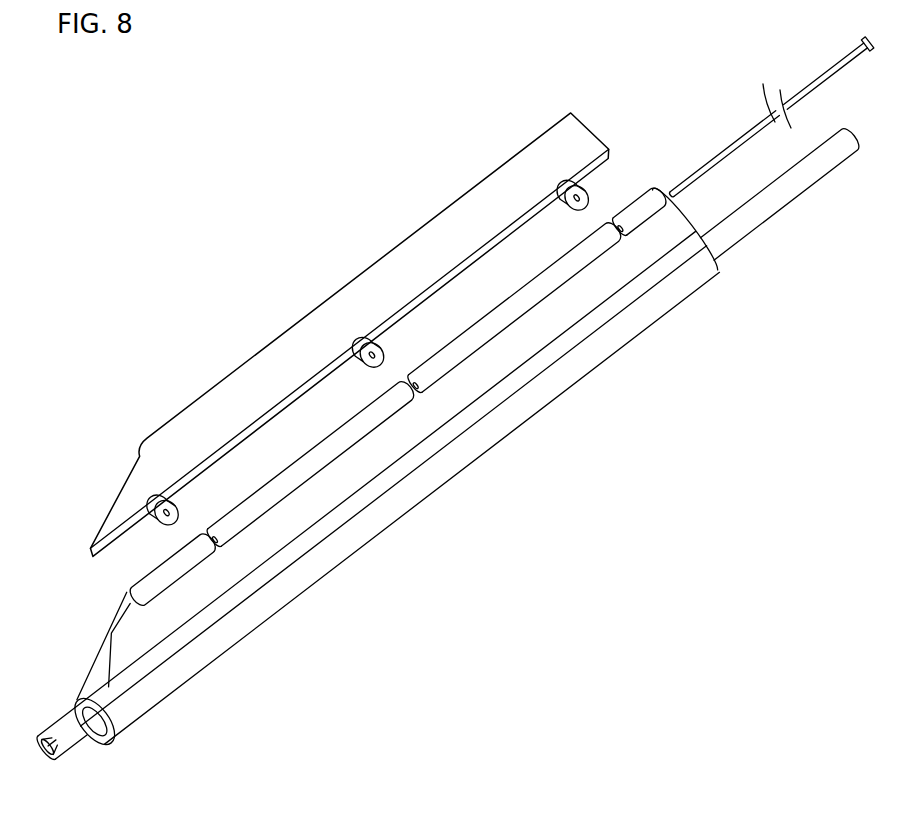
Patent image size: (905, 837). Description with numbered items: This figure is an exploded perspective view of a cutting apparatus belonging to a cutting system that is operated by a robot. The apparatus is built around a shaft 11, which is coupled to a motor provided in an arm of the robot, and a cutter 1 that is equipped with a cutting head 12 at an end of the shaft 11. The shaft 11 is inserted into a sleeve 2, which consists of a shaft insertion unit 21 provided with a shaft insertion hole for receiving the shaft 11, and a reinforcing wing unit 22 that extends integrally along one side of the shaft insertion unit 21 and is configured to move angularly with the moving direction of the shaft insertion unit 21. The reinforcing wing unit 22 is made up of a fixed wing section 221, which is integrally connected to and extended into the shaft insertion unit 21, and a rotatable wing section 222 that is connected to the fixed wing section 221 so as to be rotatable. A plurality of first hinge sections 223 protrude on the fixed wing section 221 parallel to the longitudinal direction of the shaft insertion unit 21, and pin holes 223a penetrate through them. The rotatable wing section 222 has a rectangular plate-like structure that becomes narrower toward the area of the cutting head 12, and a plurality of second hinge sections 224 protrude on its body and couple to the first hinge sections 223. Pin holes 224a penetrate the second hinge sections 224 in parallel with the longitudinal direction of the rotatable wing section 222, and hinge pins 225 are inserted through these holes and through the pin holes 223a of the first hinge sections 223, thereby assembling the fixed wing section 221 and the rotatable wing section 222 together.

The cutter 1 is at (107, 710).
The shaft 11 is at (761, 212).
The cutting head 12 is at (92, 751).
The sleeve 2 is at (383, 497).
The shaft insertion unit 21 is at (396, 511).
The reinforcing wing unit 22 is at (384, 420).
The fixed wing section 221 is at (650, 231).
The rotatable wing section 222 is at (584, 137).
The first hinge section 223 is at (505, 315).
The pin hole 223a is at (417, 392).
The second hinge section 224 is at (570, 184).
The pin hole 224a is at (372, 355).
The hinge pin 225 is at (768, 106).